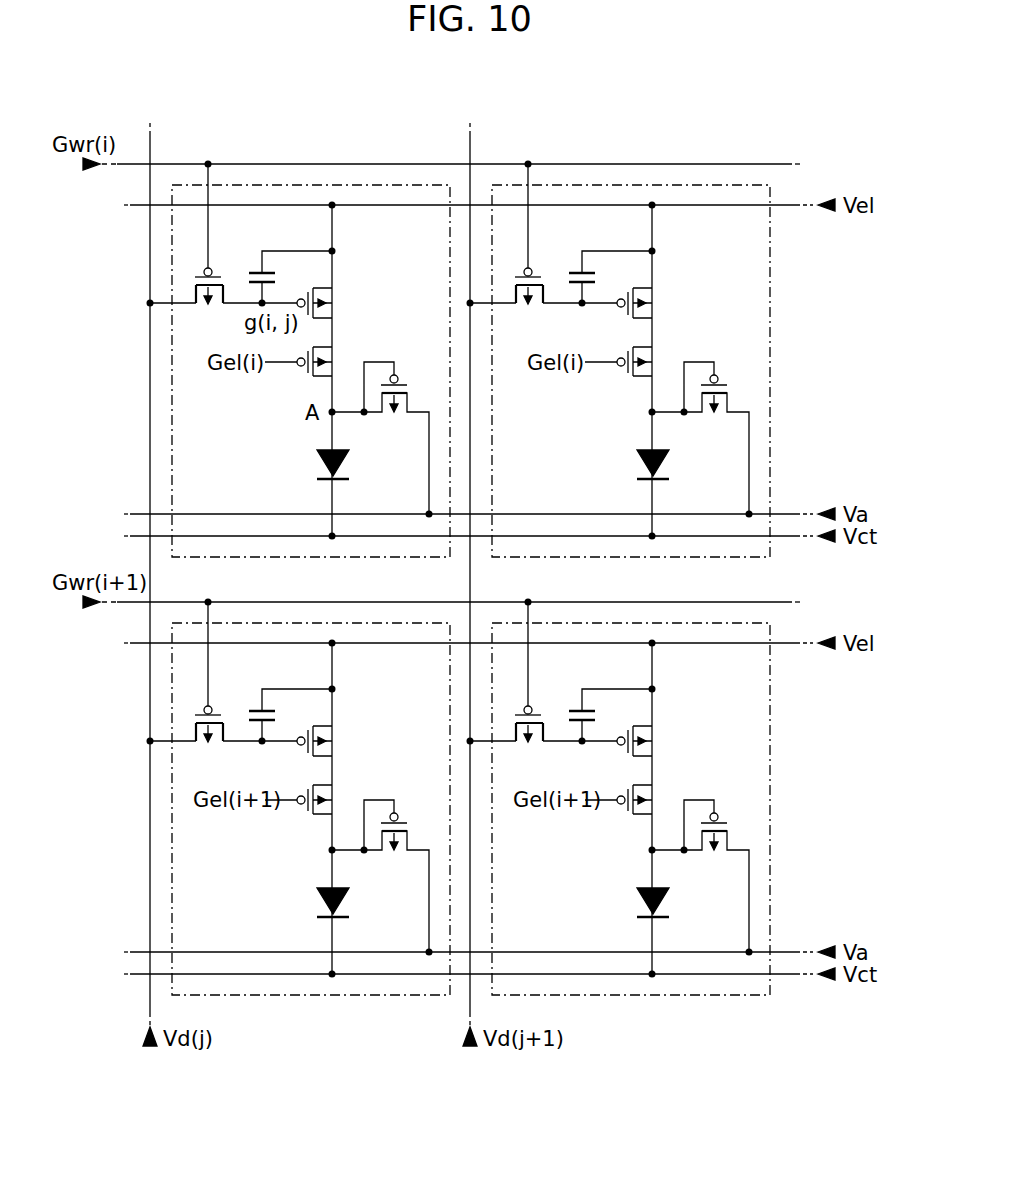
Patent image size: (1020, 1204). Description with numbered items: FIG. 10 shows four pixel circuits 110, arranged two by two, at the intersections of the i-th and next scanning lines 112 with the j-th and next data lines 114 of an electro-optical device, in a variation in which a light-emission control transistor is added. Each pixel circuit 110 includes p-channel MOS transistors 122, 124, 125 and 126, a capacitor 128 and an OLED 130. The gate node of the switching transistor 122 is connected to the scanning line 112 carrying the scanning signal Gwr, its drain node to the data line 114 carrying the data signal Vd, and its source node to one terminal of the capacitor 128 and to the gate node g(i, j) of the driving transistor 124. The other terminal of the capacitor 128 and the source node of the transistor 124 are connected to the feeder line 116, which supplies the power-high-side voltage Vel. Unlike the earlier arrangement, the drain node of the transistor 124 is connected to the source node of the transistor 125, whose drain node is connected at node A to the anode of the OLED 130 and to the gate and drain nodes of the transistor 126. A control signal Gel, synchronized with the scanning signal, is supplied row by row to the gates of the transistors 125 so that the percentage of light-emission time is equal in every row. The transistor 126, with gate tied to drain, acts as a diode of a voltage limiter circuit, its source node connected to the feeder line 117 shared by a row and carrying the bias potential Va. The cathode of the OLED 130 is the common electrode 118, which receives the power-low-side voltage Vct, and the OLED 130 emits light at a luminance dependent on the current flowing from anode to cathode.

The pixel circuit 110 is at (292, 560).
The scanning line 112 is at (134, 167).
The data line 114 is at (152, 143).
The feeder line 116 is at (782, 208).
The feeder line 117 is at (786, 511).
The common electrode 118 is at (786, 539).
The transistor 122 is at (229, 294).
The transistor 124 is at (320, 294).
The transistor 125 is at (320, 354).
The transistor 126 is at (412, 396).
The capacitor 128 is at (258, 268).
The OLED 130 is at (318, 466).